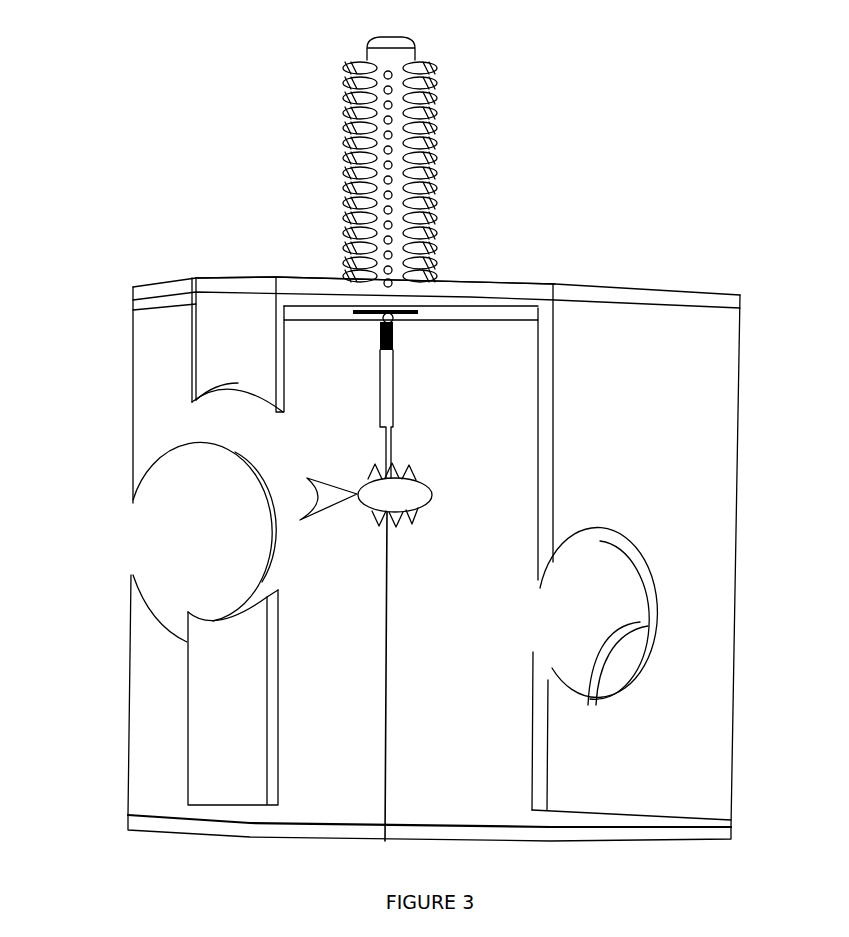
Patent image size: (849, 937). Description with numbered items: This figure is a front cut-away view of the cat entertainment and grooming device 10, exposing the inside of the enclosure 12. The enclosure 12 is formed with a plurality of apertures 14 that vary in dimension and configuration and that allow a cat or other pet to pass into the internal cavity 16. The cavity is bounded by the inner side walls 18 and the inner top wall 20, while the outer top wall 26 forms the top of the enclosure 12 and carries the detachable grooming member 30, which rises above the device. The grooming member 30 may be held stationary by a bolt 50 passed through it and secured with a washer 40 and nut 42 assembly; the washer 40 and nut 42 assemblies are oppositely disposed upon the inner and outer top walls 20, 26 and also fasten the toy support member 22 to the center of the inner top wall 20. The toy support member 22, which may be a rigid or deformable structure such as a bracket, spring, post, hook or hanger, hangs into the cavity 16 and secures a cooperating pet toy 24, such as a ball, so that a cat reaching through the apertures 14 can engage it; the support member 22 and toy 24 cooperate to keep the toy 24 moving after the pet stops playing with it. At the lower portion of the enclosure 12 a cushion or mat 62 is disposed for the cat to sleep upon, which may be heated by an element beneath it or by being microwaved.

The cat entertainment and grooming device 10 is at (126, 258).
The enclosure 12 is at (742, 365).
The apertures 14 is at (190, 526).
The internal cavity 16 is at (472, 790).
The inner side walls 18 is at (162, 420).
The inner top wall 20 is at (192, 310).
The toy support members 22 is at (377, 420).
The pet toys 24 is at (418, 510).
The outer top wall 26 is at (613, 285).
The grooming members 30 is at (442, 128).
The washer 40 is at (352, 316).
The nut 42 is at (378, 323).
The bolt 50 is at (394, 330).
The cushion or mat 62 is at (290, 824).